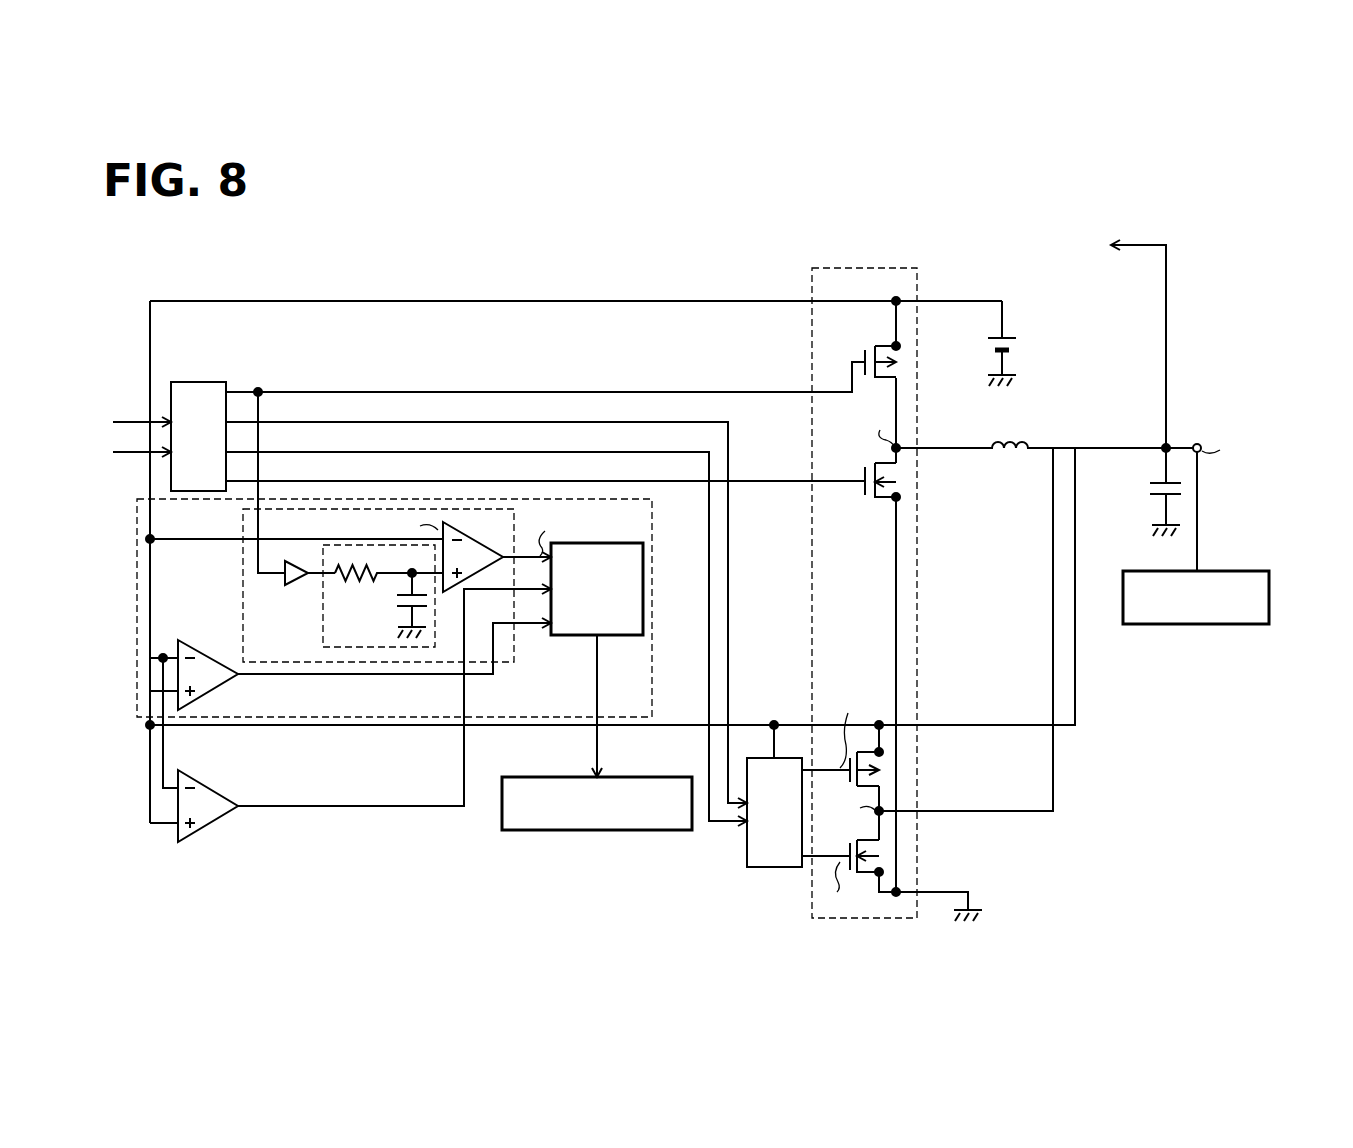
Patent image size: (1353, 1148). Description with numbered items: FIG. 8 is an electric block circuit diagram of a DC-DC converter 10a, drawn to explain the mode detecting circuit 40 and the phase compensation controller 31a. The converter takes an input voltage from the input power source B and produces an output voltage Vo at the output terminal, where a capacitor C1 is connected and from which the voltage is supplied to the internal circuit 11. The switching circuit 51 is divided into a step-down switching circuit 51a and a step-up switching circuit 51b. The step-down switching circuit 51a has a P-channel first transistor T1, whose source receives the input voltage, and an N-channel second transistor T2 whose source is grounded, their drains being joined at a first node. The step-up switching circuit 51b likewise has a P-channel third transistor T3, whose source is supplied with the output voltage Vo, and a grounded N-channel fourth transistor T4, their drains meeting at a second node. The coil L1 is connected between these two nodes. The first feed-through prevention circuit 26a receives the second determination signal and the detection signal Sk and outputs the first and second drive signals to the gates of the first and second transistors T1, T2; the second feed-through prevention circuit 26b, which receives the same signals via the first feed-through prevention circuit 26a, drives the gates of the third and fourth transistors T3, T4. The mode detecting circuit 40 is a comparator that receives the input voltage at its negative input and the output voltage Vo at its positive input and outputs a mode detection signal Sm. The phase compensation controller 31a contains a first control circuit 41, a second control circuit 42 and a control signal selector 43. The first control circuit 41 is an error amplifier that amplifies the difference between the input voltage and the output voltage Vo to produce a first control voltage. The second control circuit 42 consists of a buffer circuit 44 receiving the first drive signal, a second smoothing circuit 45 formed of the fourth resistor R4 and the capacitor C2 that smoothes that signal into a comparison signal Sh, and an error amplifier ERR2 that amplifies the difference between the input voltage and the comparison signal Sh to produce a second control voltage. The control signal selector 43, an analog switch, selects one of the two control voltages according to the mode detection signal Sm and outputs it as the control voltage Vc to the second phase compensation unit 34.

The switching regulator / DC-DC converter 10a is at (939, 172).
The internal circuit 11 is at (1197, 624).
The first feed-through prevention circuit 26a is at (197, 382).
The second feed-through prevention circuit 26b is at (775, 867).
The phase compensation controller 31a is at (652, 641).
The second phase compensation unit 34 is at (596, 830).
The mode detecting circuit 40 is at (209, 786).
The first control circuit 41 is at (206, 656).
The second control circuit 42 is at (243, 572).
The control signal selector 43 is at (611, 543).
The buffer circuit 44 is at (292, 586).
The second smoothing circuit 45 is at (323, 637).
The switching circuit 51 is at (872, 266).
The step-down switching circuit 51a is at (855, 514).
The step-up switching circuit 51b is at (857, 661).
The first transistor T1 is at (900, 372).
The second transistor T2 is at (900, 468).
The third transistor T3 is at (884, 783).
The fourth transistor T4 is at (884, 848).
The coil L1 is at (1030, 442).
The output capacitor C1 is at (1148, 478).
The capacitor C2 is at (401, 612).
The fourth resistor R4 is at (373, 580).
The input power source B is at (1008, 336).
The error amplifier ERR2 is at (358, 549).